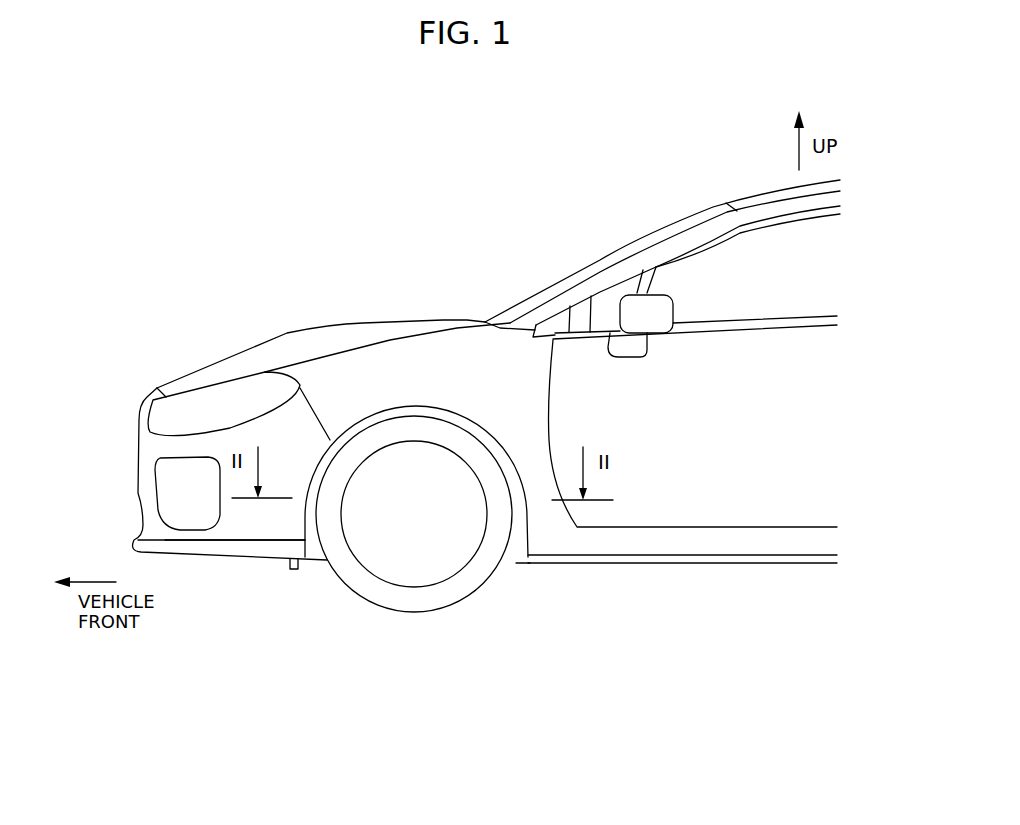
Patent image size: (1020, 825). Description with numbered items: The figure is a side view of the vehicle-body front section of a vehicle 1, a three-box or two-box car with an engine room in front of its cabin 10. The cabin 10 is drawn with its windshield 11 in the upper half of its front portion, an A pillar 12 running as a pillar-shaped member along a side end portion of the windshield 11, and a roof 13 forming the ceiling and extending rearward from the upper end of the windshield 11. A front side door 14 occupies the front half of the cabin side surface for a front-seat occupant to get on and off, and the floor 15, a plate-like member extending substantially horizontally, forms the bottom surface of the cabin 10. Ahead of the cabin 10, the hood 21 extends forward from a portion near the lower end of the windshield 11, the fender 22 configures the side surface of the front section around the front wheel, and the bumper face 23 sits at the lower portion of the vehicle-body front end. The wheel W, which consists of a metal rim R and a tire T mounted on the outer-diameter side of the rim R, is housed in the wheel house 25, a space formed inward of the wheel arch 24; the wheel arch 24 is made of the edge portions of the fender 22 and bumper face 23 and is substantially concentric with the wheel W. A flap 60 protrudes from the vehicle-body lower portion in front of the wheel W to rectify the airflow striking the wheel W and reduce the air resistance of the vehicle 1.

The vehicle 1 is at (122, 180).
The cabin 10 is at (585, 228).
The windshield 11 is at (627, 240).
The A pillar 12 is at (680, 237).
The roof 13 is at (768, 189).
The front side door 14 is at (750, 462).
The floor 15 is at (705, 563).
The hood 21 is at (303, 327).
The fender 22 is at (357, 390).
The bumper face 23 is at (260, 523).
The wheel arch 24 is at (400, 405).
The wheel house 25 is at (515, 552).
The flap 60 is at (293, 575).
The tire T is at (378, 609).
The rim R is at (405, 576).
The wheel W is at (426, 624).